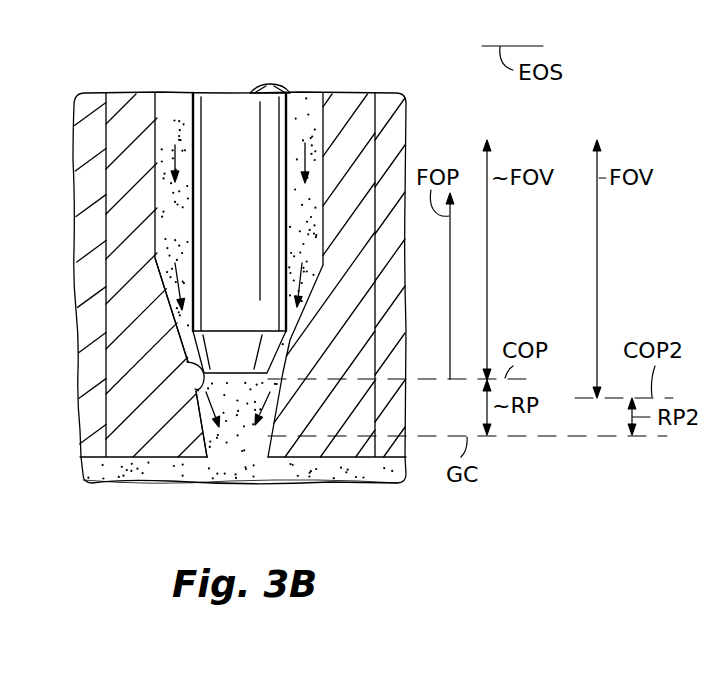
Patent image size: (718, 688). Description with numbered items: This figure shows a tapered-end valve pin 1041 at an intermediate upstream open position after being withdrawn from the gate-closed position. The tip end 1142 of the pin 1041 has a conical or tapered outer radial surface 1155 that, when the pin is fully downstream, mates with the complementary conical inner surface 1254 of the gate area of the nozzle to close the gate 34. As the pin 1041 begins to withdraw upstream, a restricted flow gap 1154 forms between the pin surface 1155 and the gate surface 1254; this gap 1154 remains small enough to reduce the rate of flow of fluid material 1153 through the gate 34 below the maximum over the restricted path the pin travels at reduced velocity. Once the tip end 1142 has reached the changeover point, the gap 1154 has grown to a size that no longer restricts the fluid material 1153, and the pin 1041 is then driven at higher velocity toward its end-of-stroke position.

The valve pin 1041 is at (266, 89).
The fluid material 1153 is at (305, 155).
The outer radial tip end surface 1155 is at (190, 358).
The inner gate surface 1254 is at (192, 375).
The restricted flow gap 1154 is at (198, 383).
The tip end 1142 is at (266, 376).
The gate 34 is at (235, 460).